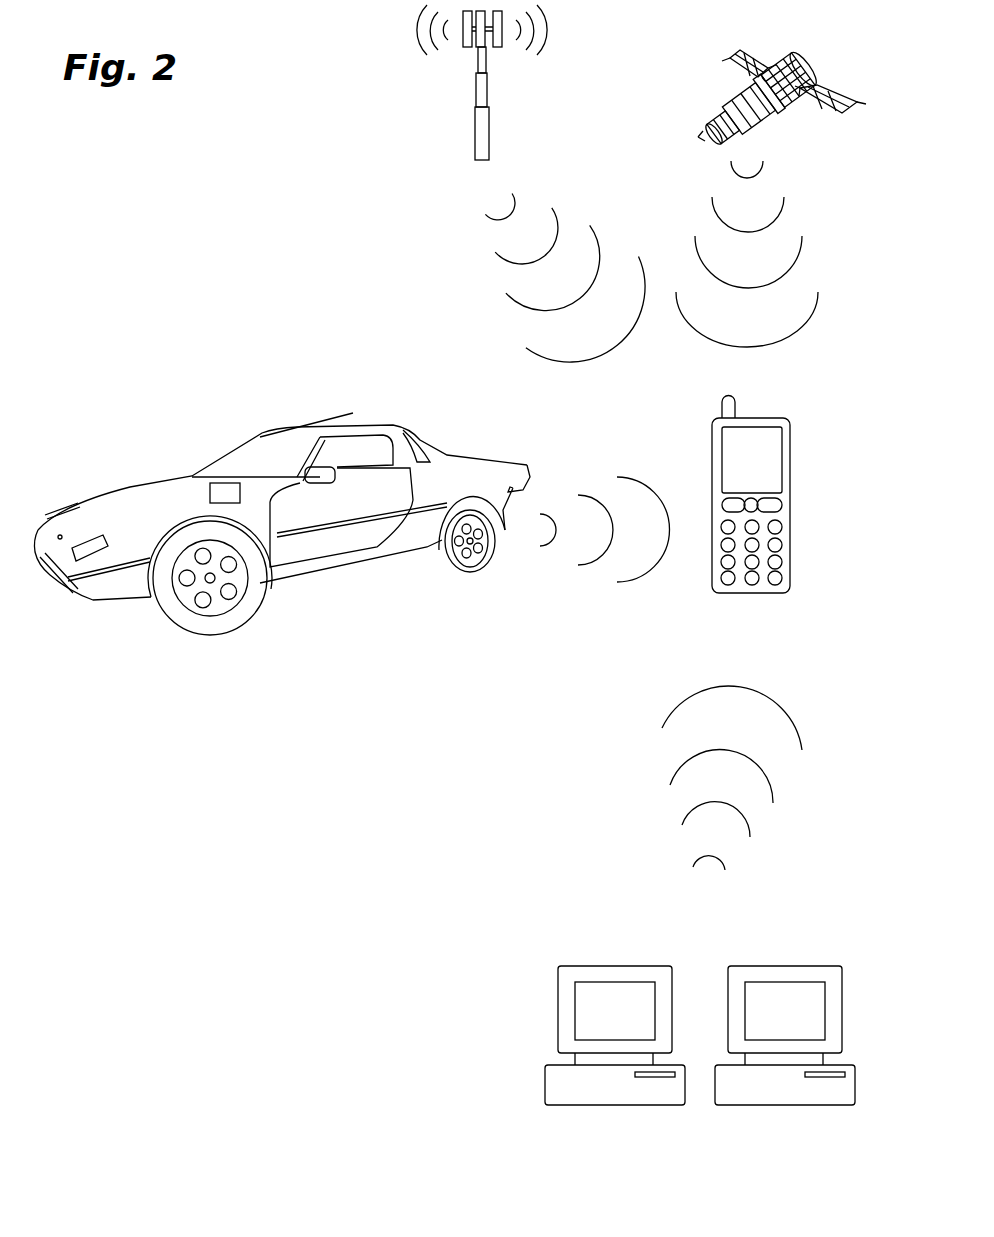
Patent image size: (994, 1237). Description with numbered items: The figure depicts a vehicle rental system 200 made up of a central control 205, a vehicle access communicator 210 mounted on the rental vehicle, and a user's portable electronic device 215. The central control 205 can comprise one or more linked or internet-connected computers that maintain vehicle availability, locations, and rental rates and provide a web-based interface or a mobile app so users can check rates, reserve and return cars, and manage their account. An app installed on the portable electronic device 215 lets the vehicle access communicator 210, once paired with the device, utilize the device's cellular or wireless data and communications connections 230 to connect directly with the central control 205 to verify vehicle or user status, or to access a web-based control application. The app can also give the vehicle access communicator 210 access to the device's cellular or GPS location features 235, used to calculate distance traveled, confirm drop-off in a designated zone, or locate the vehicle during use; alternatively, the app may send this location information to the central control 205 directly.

The system for renting vehicles 200 is at (144, 212).
The central control 205 is at (700, 1051).
The vehicle access communicator 210 is at (225, 483).
The portable electronic device 215 is at (751, 512).
The cellular or wireless data and communications connections 230 is at (531, 183).
The location features 235 is at (771, 198).